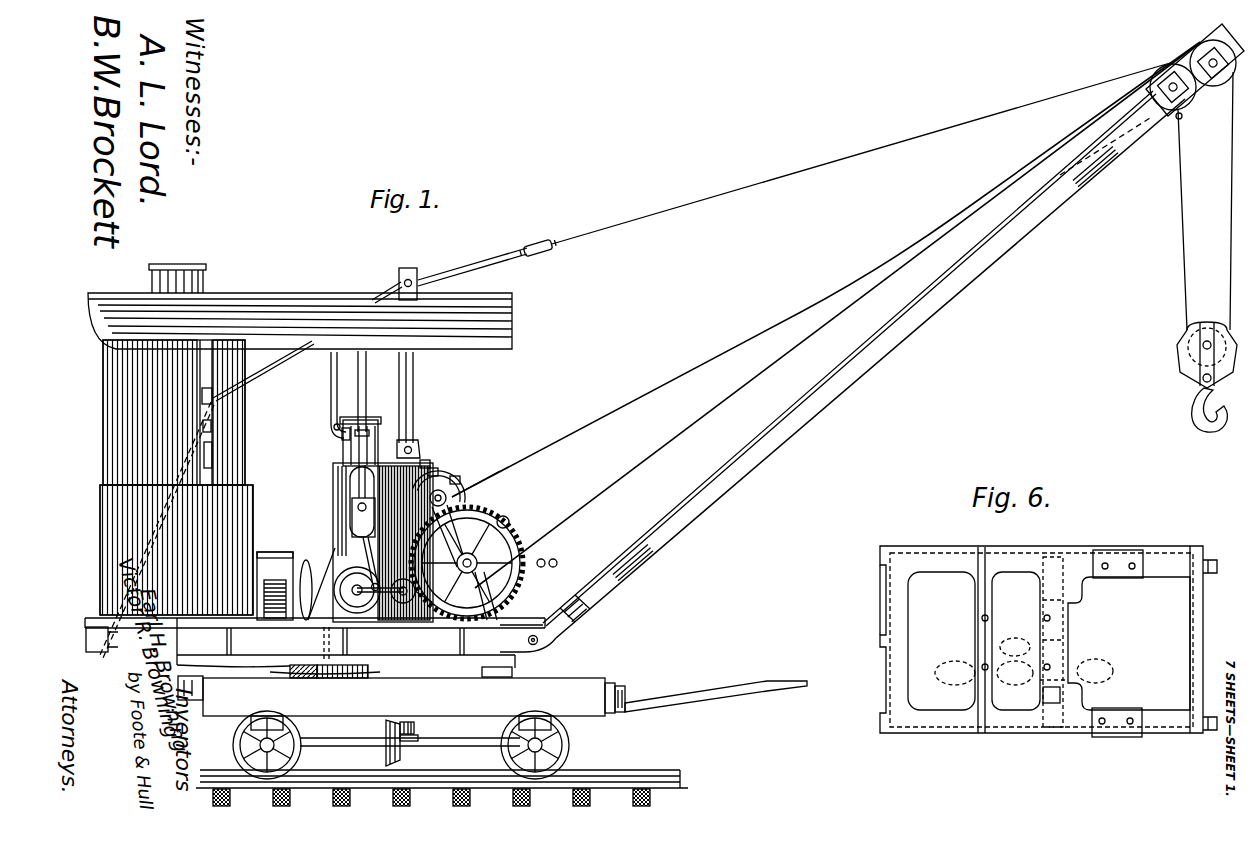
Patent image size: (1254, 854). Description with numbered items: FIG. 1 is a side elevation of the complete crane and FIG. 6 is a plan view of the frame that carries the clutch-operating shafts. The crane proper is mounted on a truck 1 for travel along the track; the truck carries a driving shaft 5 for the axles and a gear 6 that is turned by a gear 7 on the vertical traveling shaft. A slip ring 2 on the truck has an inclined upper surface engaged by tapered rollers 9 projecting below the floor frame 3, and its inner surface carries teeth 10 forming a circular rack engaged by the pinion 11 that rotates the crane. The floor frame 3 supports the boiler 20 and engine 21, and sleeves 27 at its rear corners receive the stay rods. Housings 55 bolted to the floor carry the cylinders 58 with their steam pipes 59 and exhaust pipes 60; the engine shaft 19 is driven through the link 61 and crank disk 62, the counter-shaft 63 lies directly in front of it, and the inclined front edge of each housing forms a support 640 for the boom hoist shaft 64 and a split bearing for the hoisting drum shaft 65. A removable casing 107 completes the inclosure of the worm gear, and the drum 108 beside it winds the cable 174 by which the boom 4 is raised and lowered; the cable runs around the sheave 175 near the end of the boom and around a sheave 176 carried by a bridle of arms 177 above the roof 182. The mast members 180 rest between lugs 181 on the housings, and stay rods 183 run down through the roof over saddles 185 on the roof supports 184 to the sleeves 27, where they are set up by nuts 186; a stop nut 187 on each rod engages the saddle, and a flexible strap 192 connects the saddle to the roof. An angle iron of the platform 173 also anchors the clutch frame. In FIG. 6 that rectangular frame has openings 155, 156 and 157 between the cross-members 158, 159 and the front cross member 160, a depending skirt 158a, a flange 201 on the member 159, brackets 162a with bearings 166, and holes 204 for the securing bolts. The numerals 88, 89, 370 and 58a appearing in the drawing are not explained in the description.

In FIG. 1, the truck 1 is at (492, 696).
In FIG. 1, the slip ring 2 is at (403, 670).
In FIG. 1, the floor frame 3 is at (315, 641).
In FIG. 1, the boom 4 is at (684, 531).
In FIG. 1, the driving shaft 5 is at (452, 742).
In FIG. 1, the gear 6 is at (394, 746).
In FIG. 1, the gear 7 is at (412, 736).
In FIG. 1, the tapered rollers 9 is at (522, 666).
In FIG. 1, the teeth 10 is at (342, 679).
In FIG. 1, the pinion 11 is at (322, 679).
In FIG. 1, the engine shaft 19 is at (364, 622).
In FIG. 1, the boiler 20 is at (176, 477).
In FIG. 1, the engine 21 is at (344, 444).
In FIG. 1, the sleeves 27 is at (118, 650).
In FIG. 1, the housings 55 is at (432, 470).
In FIG. 1, the cylinders 58 is at (333, 432).
In FIG. 1, the steam pipes 59 is at (331, 404).
In FIG. 1, the exhaust pipes 60 is at (362, 369).
In FIG. 1, the link 61 is at (367, 590).
In FIG. 1, the crank disk 62 is at (325, 622).
In FIG. 1, the counter-shaft 63 is at (416, 622).
In FIG. 1, the boom hoist shaft 64 is at (447, 496).
In FIG. 1, the hoisting drum shaft 65 is at (506, 520).
In FIG. 1, the gear wheel 88 is at (492, 564).
In FIG. 1, the bracket 89 is at (515, 536).
In FIG. 1, the removable casing 107 is at (450, 490).
In FIG. 1, the drum 108 is at (455, 478).
In FIG. 1, the platform 173 is at (262, 555).
In FIG. 1, the cable 174 is at (692, 376).
In FIG. 1, the sheave 175 is at (1165, 77).
In FIG. 1, the sheave 176 is at (556, 243).
In FIG. 1, the arms 177 is at (505, 252).
In FIG. 1, the mast members 180 is at (413, 369).
In FIG. 1, the lugs 181 is at (416, 447).
In FIG. 1, the roof 182 is at (497, 314).
In FIG. 1, the stay rods 183 is at (272, 368).
In FIG. 1, the roof supports 184 is at (212, 452).
In FIG. 1, the saddles 185 is at (212, 424).
In FIG. 1, the nuts 186 is at (112, 655).
In FIG. 1, the stop nut 187 is at (213, 400).
In FIG. 1, the flexible metal strap 192 is at (200, 372).
In FIG. 1, the rack 370 is at (408, 740).
In FIG. 1, the support 640 is at (495, 476).
In FIG. 6, the opening 155 is at (941, 641).
In FIG. 6, the opening 156 is at (1016, 641).
In FIG. 6, the opening 157 is at (1129, 643).
In FIG. 6, the cross-member 158 is at (983, 619).
In FIG. 6, the depending skirt 158a is at (960, 543).
In FIG. 6, the side plate 58a is at (890, 592).
In FIG. 6, the cross-member 159 is at (1044, 618).
In FIG. 6, the cross member 160 is at (1192, 650).
In FIG. 6, the brackets 162a is at (985, 674).
In FIG. 6, the bearings 166 is at (1015, 648).
In FIG. 6, the flange 201 is at (1095, 672).
In FIG. 6, the holes 204 is at (1108, 566).